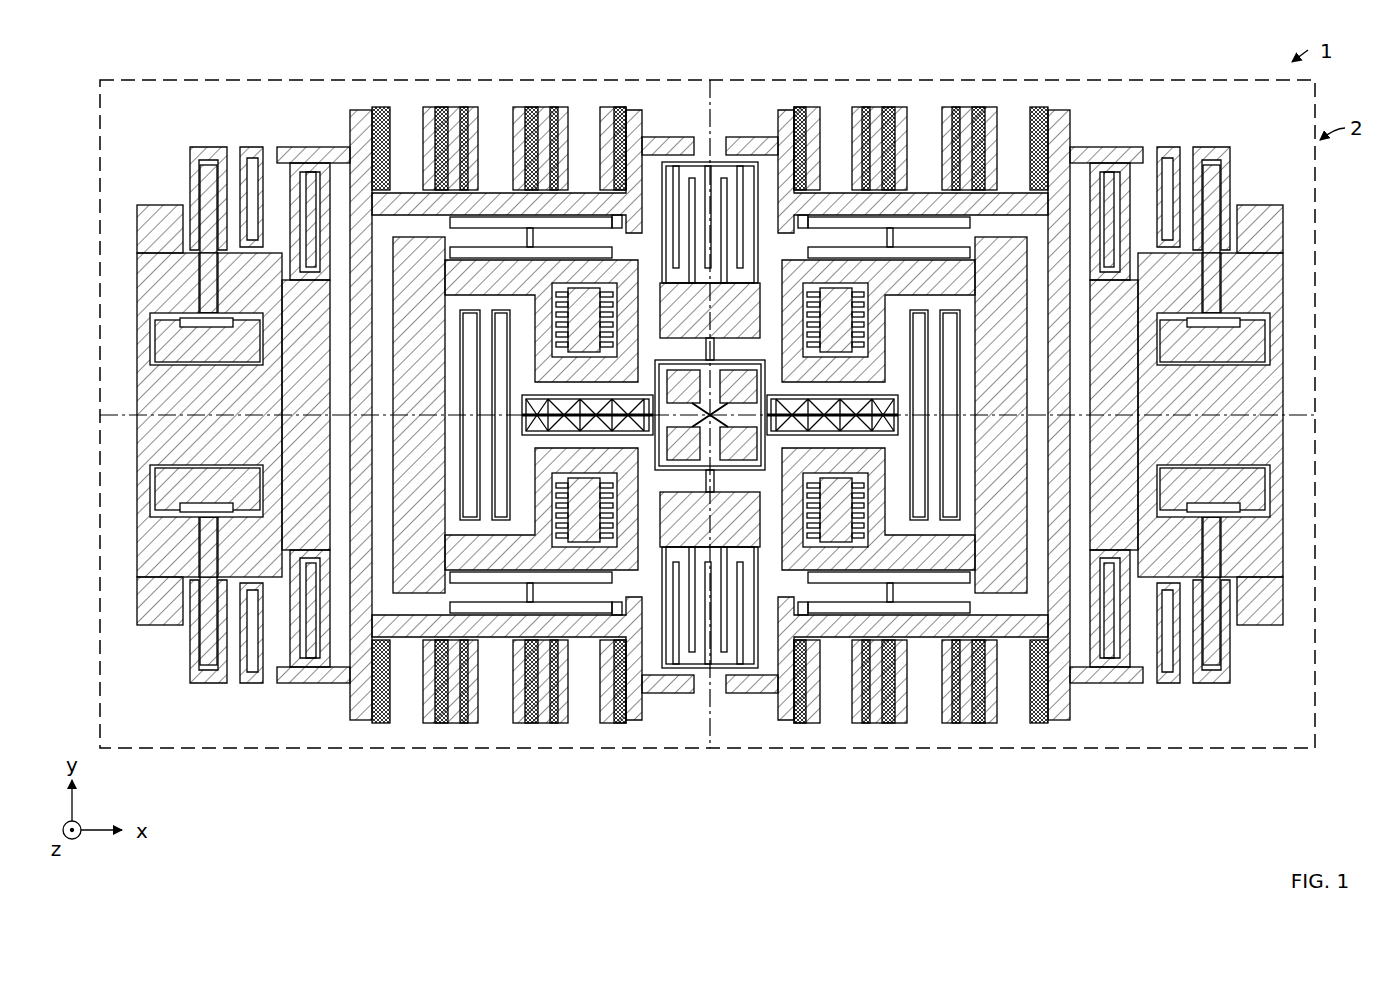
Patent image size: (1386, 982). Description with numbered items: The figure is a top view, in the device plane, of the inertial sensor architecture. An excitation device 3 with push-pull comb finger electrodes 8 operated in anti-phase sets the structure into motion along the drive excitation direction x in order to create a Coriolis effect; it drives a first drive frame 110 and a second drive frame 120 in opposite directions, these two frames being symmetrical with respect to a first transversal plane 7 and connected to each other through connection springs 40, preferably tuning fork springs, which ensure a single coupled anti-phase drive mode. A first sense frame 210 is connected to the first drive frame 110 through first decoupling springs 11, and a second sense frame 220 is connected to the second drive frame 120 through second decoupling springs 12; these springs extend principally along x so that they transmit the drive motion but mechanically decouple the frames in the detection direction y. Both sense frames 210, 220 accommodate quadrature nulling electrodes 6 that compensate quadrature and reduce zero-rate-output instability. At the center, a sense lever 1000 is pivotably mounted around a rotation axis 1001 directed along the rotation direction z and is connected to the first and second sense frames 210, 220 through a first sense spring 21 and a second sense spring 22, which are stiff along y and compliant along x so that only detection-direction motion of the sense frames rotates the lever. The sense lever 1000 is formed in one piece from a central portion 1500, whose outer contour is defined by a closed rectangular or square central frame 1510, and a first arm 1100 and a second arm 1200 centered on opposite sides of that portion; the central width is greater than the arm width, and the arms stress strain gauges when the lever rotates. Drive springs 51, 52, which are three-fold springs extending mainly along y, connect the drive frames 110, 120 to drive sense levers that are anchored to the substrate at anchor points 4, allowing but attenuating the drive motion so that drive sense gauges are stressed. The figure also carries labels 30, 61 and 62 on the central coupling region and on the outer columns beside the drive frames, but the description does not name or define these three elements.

The excitation device 3 is at (468, 107).
The anchor point 4 is at (195, 326).
The quadrature nulling electrodes 6 is at (640, 380).
The first transversal plane 7 is at (702, 695).
The push-pull comb finger electrodes 8 is at (122, 416).
The first decoupling springs 11 is at (500, 222).
The second decoupling springs 12 is at (985, 235).
The first sense spring 21 is at (260, 342).
The second sense spring 22 is at (1160, 342).
The central coupling spring 30 is at (772, 392).
The connection springs 40 is at (668, 165).
The drive spring 51 is at (200, 190).
The drive spring 52 is at (1220, 190).
The left anchor column 61 is at (303, 270).
The right anchor column 62 is at (1112, 275).
The first drive frame 110 is at (345, 277).
The second drive frame 120 is at (1075, 297).
The first sense frame 210 is at (430, 447).
The second sense frame 220 is at (990, 447).
The sense lever 1000 is at (480, 530).
The rotation axis 1001 is at (770, 560).
The first arm 1100 is at (587, 283).
The second arm 1200 is at (832, 380).
The central portion 1500 is at (612, 570).
The central frame 1510 is at (842, 570).